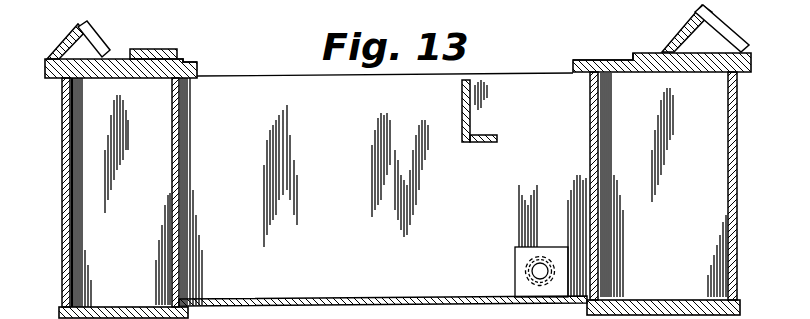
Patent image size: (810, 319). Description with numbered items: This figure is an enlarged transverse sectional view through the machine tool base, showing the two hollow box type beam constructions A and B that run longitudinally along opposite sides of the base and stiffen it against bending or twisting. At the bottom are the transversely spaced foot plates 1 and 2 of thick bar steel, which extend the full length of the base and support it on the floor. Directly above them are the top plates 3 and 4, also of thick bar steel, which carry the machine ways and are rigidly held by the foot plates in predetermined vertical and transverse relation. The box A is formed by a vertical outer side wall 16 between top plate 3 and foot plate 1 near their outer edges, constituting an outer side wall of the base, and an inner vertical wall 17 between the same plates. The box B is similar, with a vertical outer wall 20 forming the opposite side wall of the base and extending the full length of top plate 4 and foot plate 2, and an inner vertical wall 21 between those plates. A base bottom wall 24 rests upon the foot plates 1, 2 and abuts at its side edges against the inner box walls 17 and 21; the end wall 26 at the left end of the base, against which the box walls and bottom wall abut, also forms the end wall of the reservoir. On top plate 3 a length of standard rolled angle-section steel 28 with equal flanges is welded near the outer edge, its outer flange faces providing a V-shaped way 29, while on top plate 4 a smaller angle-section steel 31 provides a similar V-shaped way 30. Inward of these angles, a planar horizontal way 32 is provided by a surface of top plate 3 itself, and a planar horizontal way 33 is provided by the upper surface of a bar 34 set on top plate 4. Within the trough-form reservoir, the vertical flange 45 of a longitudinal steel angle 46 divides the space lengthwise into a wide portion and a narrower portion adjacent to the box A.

The foot plate 1 is at (740, 302).
The foot plate 2 is at (59, 313).
The top plate 3 is at (751, 63).
The top plate 4 is at (45, 67).
The vertical outer side wall 16 is at (737, 163).
The inner vertical wall 17 is at (590, 122).
The vertical outer wall 20 is at (62, 144).
The inner vertical wall 21 is at (179, 169).
The base bottom wall 24 is at (371, 298).
The end wall 26 is at (343, 257).
The angle-section steel 28 is at (727, 27).
The V-shaped way 29 is at (690, 10).
The V-shaped way 30 is at (66, 29).
The angle-section steel 31 is at (100, 41).
The planar horizontal way 32 is at (614, 59).
The planar horizontal way 33 is at (146, 50).
The bar 34 is at (178, 56).
The vertical flange 45 is at (462, 95).
The longitudinal steel angle 46 is at (476, 138).
The hollow box type beam construction A is at (737, 86).
The hollow box type beam construction B is at (62, 90).